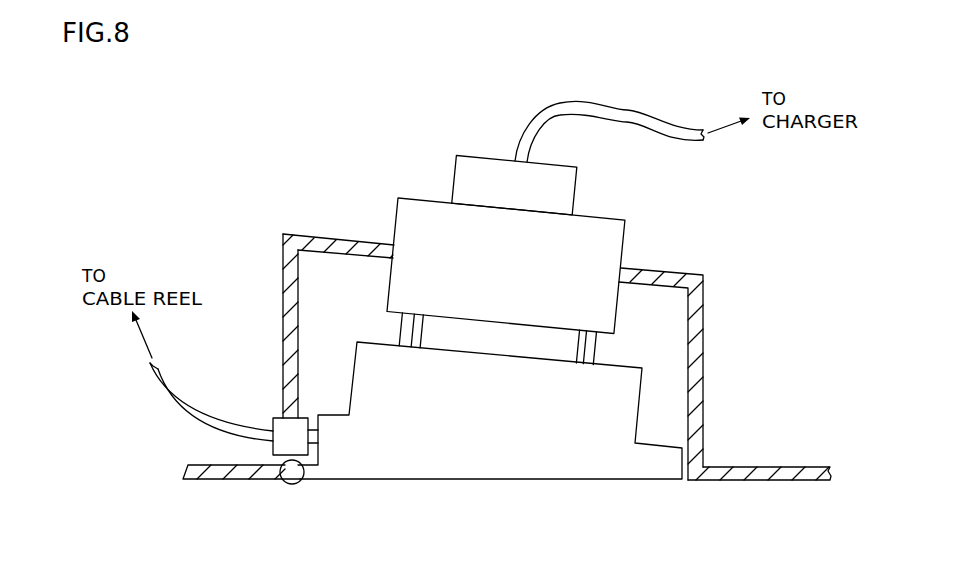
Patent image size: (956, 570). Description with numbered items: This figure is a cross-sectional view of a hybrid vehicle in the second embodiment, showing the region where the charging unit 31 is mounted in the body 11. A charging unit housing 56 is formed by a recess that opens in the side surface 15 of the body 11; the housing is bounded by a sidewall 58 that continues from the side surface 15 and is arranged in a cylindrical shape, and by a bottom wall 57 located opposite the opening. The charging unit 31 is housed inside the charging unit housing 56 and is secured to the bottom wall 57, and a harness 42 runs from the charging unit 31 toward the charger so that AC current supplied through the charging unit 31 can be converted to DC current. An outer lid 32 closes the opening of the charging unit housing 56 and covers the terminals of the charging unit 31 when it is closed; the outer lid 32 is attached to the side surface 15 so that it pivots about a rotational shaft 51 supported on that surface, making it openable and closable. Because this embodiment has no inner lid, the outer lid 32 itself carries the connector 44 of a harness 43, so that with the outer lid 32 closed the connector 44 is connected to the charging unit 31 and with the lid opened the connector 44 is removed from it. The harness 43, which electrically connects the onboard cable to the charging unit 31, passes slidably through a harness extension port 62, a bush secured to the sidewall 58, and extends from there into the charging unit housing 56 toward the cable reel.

The body 11 is at (228, 488).
The side surface 15 is at (755, 472).
The charging unit 31 is at (603, 243).
The outer lid 32 is at (538, 482).
The harness 42 is at (575, 106).
The harness 43 is at (197, 412).
The connector 44 is at (435, 333).
The rotational shaft 51 is at (295, 484).
The charging unit housing 56 is at (310, 288).
The bottom wall 57 is at (337, 246).
The sidewall 58 is at (697, 318).
The harness extension port 62 is at (278, 449).